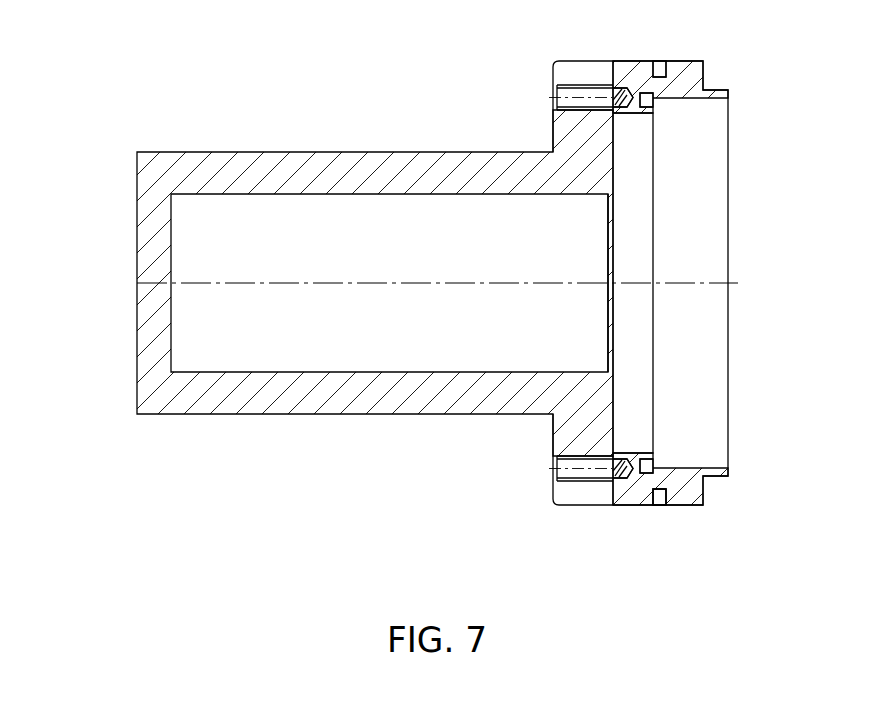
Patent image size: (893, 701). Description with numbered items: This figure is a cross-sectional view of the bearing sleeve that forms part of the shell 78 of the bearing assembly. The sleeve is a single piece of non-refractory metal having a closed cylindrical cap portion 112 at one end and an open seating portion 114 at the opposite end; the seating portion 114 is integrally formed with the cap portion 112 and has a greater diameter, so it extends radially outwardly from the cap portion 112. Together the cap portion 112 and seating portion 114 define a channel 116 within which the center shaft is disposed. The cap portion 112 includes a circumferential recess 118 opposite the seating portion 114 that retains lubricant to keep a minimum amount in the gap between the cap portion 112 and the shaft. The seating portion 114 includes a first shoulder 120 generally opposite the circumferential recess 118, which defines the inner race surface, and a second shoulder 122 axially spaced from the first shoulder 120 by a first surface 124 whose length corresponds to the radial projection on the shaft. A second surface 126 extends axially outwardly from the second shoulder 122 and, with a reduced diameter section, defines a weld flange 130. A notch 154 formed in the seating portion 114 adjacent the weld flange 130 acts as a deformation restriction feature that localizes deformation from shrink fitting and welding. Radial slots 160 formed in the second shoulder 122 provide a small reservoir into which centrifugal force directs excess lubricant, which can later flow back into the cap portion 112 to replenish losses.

The shell 78 is at (238, 121).
The cap portion 112 is at (297, 152).
The seating portion 114 is at (682, 61).
The channel 116 is at (352, 260).
The circumferential recess 118 is at (158, 361).
The first shoulder 120 is at (615, 383).
The second shoulder 122 is at (653, 452).
The first surface 124 is at (630, 452).
The second surface 126 is at (687, 100).
The weld flange 130 is at (729, 88).
The notch 154 is at (655, 505).
The radial slot 160 is at (689, 83).